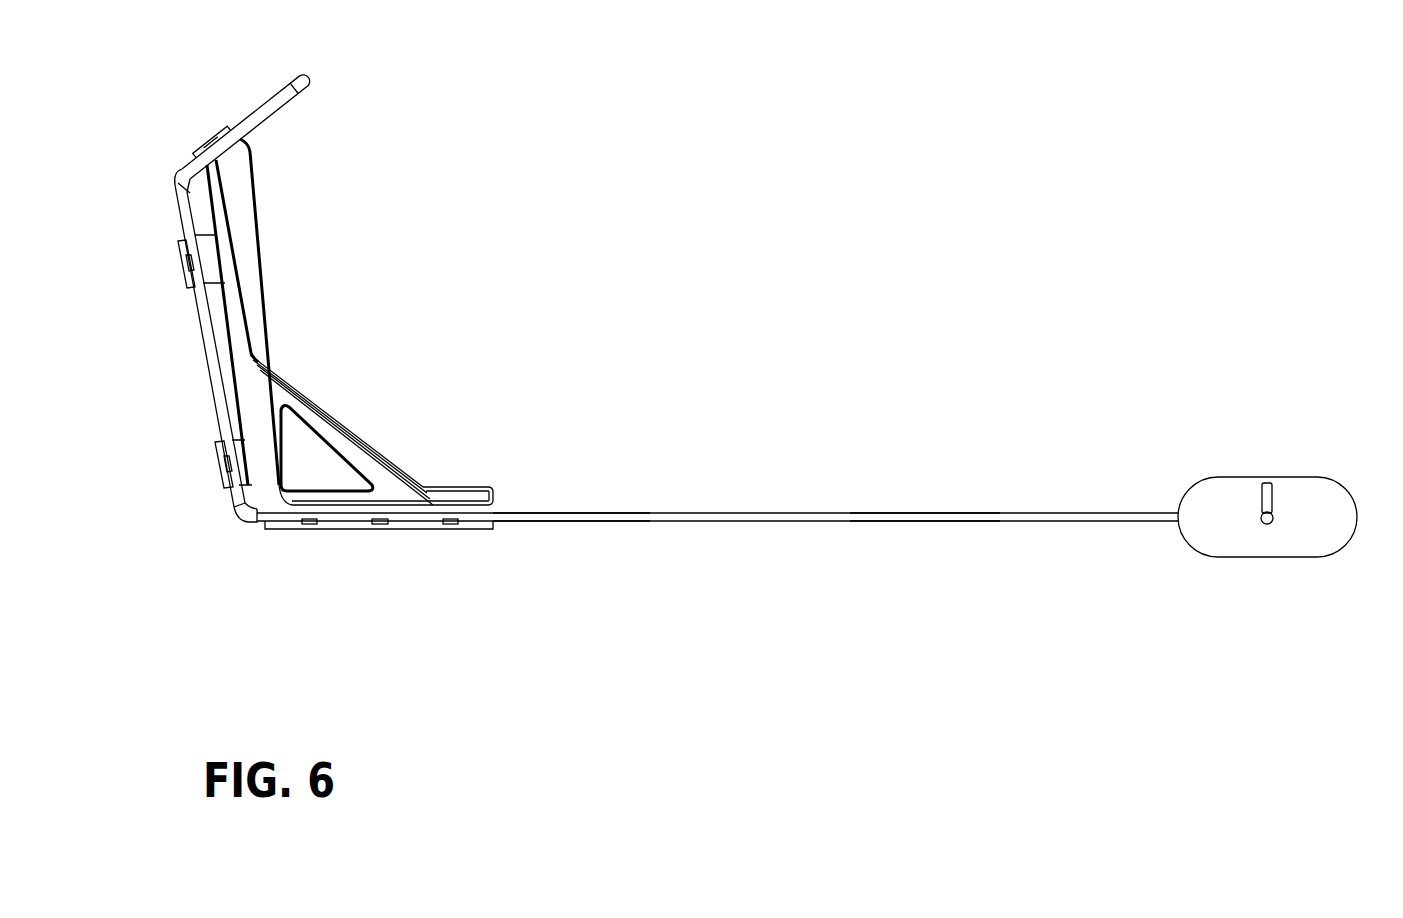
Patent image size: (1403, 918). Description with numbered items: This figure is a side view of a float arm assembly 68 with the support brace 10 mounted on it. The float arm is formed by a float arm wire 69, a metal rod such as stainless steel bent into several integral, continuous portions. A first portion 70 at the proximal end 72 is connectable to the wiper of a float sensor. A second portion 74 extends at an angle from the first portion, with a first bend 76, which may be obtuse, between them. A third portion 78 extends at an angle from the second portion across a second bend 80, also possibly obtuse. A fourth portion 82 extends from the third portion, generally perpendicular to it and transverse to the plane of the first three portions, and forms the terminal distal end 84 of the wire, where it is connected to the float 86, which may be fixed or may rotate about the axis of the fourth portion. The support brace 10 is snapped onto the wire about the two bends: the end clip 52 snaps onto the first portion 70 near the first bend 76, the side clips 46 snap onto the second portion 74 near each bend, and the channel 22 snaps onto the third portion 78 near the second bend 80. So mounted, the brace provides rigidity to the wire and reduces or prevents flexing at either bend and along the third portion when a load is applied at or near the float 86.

The support brace 10 is at (312, 386).
The channel 22 is at (388, 541).
The side clip 46 is at (174, 271).
The end clip 52 is at (210, 143).
The float arm assembly 68 is at (741, 471).
The float arm wire 69 is at (915, 535).
The first portion 70 is at (265, 101).
The proximal end 72 is at (307, 88).
The second portion 74 is at (181, 203).
The first bend 76 is at (177, 177).
The third portion 78 is at (563, 523).
The second bend 80 is at (240, 517).
The fourth portion 82 is at (1273, 498).
The distal end 84 is at (1267, 482).
The float 86 is at (1357, 510).